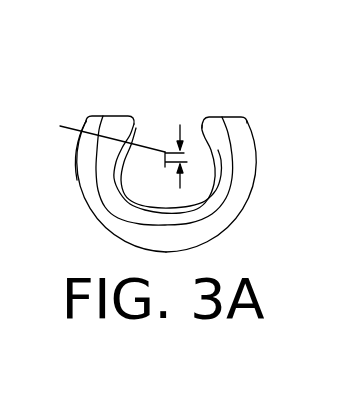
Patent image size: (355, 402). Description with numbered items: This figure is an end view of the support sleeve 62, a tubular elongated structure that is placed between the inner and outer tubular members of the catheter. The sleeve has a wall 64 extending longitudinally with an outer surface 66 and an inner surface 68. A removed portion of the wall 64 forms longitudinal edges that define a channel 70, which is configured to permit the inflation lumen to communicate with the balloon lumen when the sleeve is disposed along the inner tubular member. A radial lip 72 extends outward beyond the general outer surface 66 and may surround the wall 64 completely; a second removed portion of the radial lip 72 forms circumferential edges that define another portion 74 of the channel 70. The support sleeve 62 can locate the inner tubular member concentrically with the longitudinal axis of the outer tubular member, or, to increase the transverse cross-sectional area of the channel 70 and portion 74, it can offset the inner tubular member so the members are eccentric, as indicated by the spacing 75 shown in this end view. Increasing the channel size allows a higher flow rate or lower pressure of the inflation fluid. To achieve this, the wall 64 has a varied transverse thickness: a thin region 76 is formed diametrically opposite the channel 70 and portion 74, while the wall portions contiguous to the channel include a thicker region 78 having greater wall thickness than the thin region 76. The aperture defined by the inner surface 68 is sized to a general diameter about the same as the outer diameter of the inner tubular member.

The support sleeve 62 is at (115, 105).
The wall 64 is at (218, 117).
The outer surface 66 is at (137, 215).
The inner surface 68 is at (122, 158).
The channel 70 is at (192, 115).
The radial lip 72 is at (242, 148).
The portion of channel 74 is at (159, 122).
The spacing 75 is at (181, 190).
The thin region 76 is at (163, 222).
The thicker region 78 is at (117, 117).